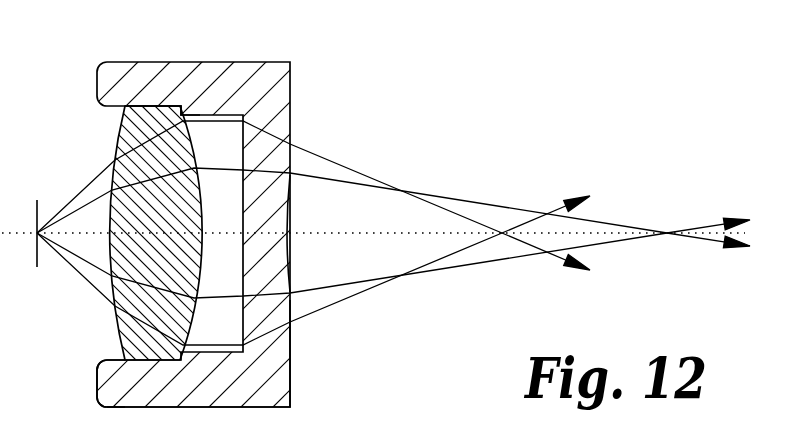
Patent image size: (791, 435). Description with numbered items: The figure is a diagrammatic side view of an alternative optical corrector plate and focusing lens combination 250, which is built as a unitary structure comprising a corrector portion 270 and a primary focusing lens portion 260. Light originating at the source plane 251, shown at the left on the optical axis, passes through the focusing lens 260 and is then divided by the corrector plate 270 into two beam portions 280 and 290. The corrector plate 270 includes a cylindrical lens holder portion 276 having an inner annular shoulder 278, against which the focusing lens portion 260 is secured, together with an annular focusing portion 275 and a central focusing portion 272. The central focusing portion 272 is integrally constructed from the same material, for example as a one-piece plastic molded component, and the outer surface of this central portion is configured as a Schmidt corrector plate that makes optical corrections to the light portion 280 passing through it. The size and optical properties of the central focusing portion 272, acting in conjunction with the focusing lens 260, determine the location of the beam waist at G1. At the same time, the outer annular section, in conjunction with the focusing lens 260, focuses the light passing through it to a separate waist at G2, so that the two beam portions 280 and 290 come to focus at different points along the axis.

The optical corrector plate and focusing lens combination 250 is at (313, 64).
The source plane 251 is at (48, 265).
The focusing lens portion 260 is at (118, 133).
The corrector portion 270 is at (300, 91).
The central focusing portion 272 is at (293, 222).
The annular focusing portion 275 is at (291, 377).
The cylindrical lens holder portion 276 is at (103, 386).
The inner annular shoulder 278 is at (167, 105).
The light portion 280 is at (612, 223).
The light portion 290 is at (335, 163).
The waist G1 is at (668, 231).
The waist G2 is at (503, 231).